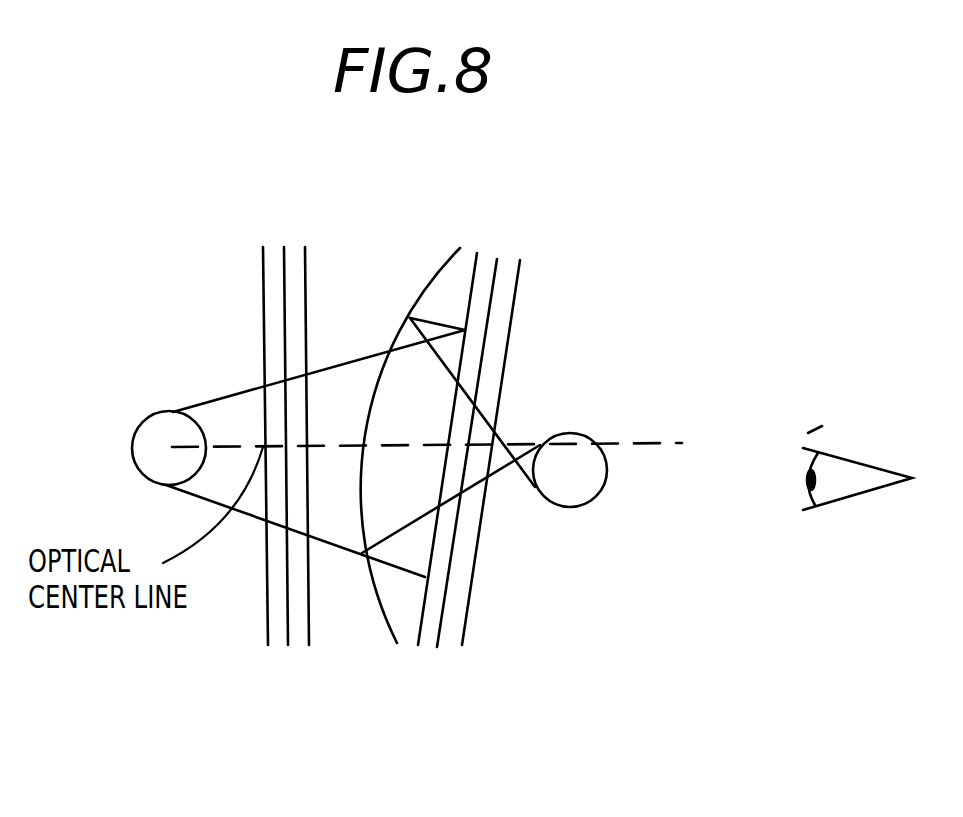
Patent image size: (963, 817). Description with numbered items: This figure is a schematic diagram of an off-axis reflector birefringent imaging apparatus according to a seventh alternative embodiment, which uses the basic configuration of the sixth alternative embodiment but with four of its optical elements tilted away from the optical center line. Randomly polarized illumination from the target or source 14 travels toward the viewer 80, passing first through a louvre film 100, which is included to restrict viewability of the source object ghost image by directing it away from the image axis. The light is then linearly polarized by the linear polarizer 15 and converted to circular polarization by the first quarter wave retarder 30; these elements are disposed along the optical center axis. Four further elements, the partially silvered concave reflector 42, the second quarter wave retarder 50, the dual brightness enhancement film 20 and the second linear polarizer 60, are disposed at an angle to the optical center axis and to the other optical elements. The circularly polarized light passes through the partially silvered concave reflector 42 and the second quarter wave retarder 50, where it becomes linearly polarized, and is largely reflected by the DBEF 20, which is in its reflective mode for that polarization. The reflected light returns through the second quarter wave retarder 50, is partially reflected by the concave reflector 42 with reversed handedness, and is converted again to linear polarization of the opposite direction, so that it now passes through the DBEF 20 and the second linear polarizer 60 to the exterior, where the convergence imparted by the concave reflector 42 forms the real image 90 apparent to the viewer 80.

The target or source 14 is at (158, 428).
The louvre film 100 is at (268, 637).
The linear polarizer 15 is at (285, 637).
The first quarter wave retarder 30 is at (316, 636).
The partially silvered concave reflector 42 is at (398, 643).
The second quarter wave retarder 50 is at (418, 645).
The dual brightness enhancement film (DBEF) 20 is at (437, 648).
The second linear polarizer 60 is at (462, 645).
The real image 90 is at (575, 497).
The viewer 80 is at (862, 483).